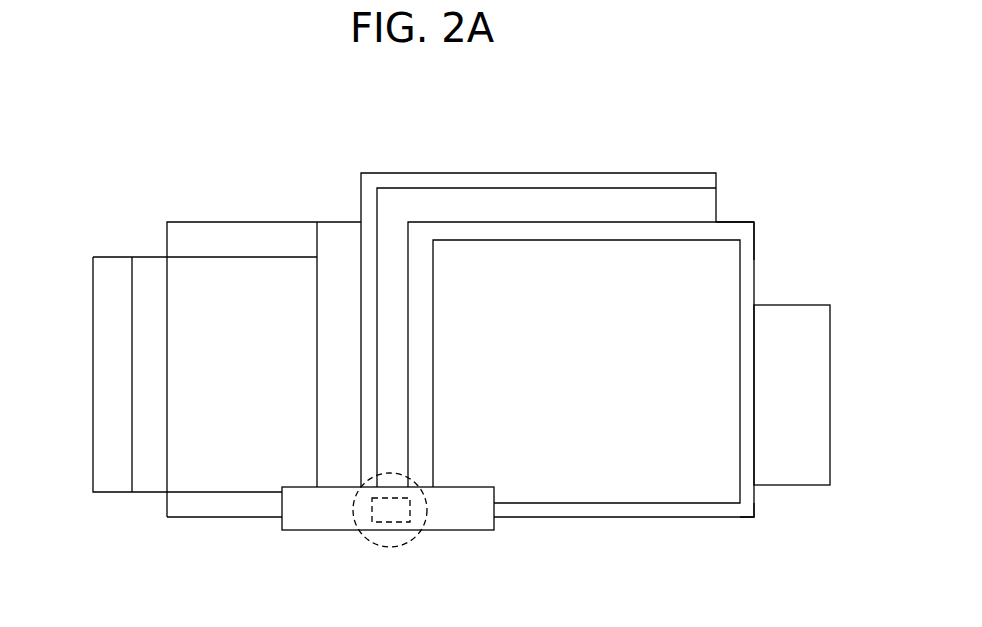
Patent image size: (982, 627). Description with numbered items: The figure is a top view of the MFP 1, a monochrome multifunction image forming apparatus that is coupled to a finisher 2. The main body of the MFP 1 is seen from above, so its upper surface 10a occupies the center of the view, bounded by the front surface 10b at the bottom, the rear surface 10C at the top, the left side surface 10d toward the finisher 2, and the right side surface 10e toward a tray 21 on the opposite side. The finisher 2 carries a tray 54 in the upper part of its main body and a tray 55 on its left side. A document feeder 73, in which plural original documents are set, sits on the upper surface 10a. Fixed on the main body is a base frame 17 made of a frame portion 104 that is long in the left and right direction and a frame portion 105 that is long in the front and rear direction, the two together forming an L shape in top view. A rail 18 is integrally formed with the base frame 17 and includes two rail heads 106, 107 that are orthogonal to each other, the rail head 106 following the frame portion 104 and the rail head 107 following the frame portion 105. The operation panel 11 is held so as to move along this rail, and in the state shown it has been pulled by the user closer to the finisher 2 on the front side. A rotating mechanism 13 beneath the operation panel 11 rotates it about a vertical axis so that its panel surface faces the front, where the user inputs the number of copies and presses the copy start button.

The MFP 1 is at (312, 125).
The finisher 2 is at (204, 238).
The tray (second tray) 54 is at (153, 283).
The tray (third tray) 55 is at (113, 295).
The upper surface 10a is at (338, 242).
The front surface 10b is at (745, 510).
The rear surface 10C is at (727, 232).
The left side surface 10d is at (314, 302).
The right side surface 10e is at (757, 252).
The rail 18 is at (434, 295).
The rail head 106 is at (418, 180).
The rail head 107 is at (367, 417).
The base frame 17 is at (573, 294).
The frame portion 104 is at (609, 205).
The frame portion 105 is at (393, 323).
The document feeder 73 is at (646, 488).
The tray 21 is at (798, 322).
The operation panel 11 is at (480, 531).
The rotating mechanism 13 is at (415, 538).